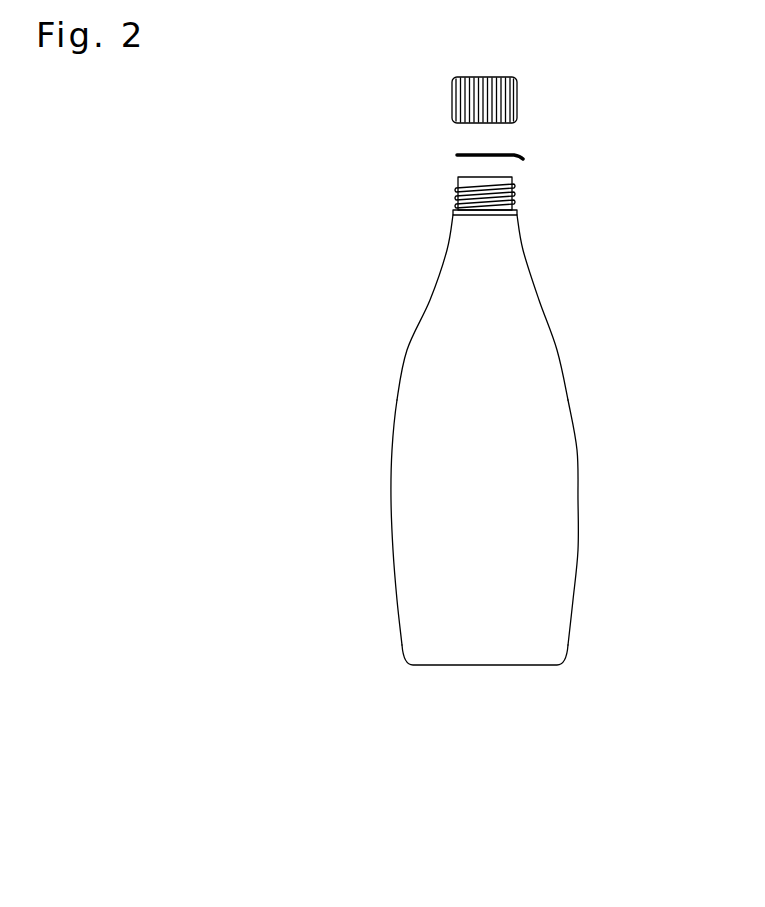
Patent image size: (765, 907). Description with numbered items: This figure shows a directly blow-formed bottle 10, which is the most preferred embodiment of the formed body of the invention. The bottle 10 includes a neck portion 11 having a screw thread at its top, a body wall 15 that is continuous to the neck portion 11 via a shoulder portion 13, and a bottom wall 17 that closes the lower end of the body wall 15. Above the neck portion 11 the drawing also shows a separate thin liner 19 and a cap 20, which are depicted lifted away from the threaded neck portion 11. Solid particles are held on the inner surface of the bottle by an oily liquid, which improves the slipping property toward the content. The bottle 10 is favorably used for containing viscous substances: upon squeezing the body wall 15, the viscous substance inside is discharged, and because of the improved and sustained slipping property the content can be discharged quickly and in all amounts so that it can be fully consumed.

The bottle 10 is at (461, 444).
The neck portion 11 is at (530, 196).
The shoulder portion 13 is at (555, 314).
The body wall 15 is at (568, 458).
The bottom wall 17 is at (530, 666).
The liner / sealing member 19 is at (462, 153).
The cap 20 is at (518, 98).